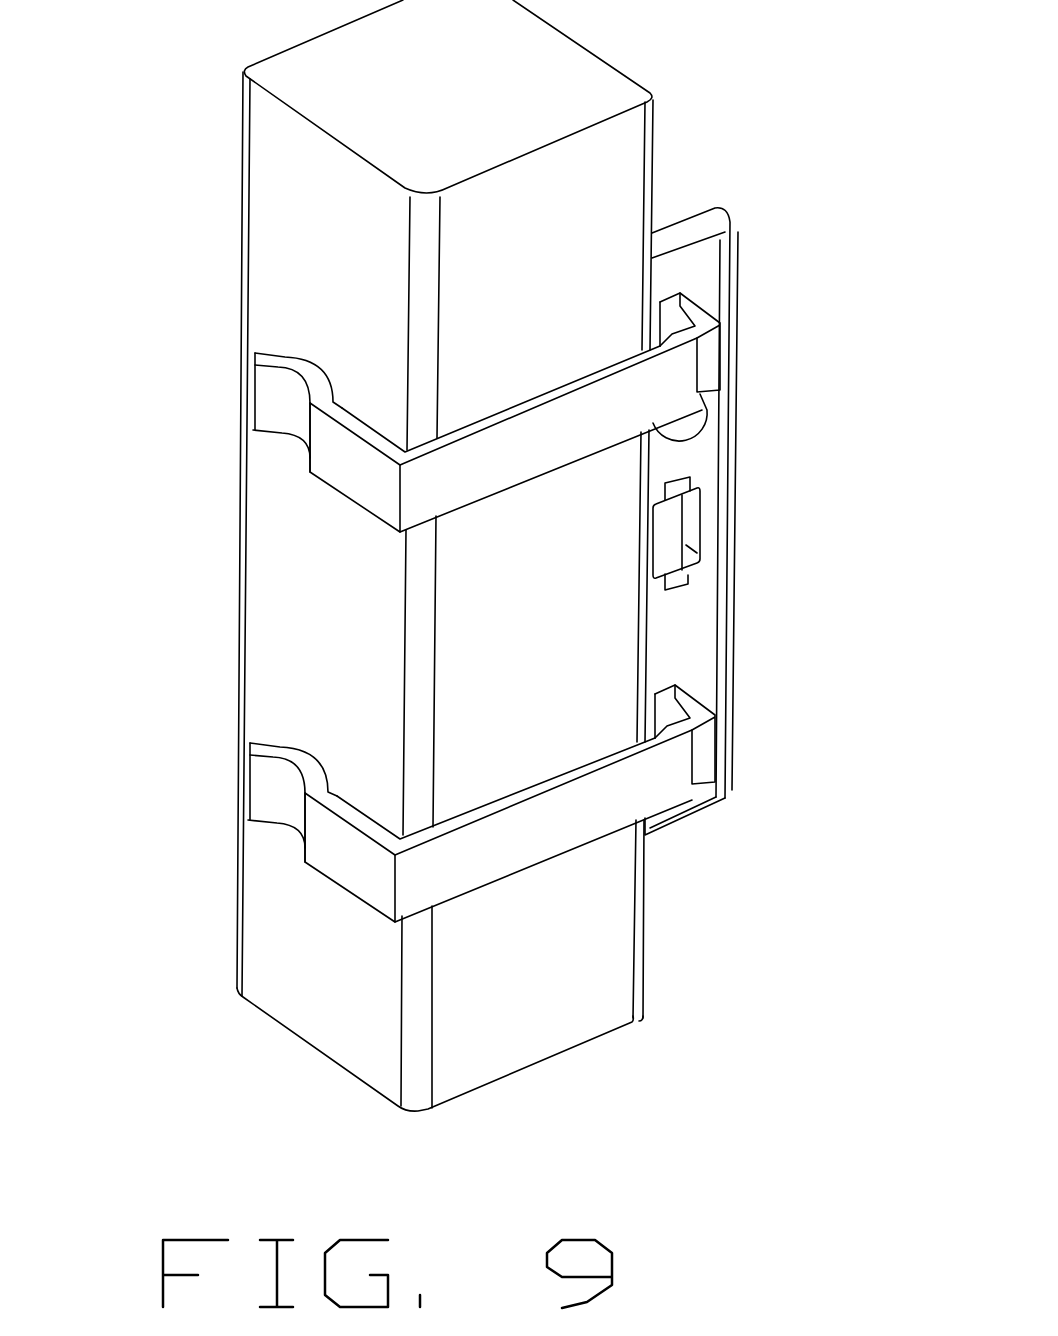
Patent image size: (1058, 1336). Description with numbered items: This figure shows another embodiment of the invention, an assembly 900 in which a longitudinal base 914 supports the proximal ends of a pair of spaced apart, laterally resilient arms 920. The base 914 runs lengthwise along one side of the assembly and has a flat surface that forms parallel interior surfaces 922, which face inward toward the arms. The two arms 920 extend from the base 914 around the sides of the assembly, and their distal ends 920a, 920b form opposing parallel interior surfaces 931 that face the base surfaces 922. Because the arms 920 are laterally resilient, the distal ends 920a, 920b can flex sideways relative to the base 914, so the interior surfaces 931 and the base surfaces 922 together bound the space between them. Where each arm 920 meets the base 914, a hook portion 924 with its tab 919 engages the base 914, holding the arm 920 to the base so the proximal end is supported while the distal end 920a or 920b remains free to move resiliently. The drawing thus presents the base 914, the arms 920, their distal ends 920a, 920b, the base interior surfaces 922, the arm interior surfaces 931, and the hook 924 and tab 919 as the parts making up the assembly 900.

The post assembly 900 is at (773, 162).
The longitudinal base 914 is at (740, 585).
The hook tab 919 is at (556, 388).
The laterally resilient arms 920 is at (391, 574).
The distal end of arm 920a is at (252, 383).
The distal end of arm 920b is at (247, 820).
The parallel interior surfaces 922 is at (643, 495).
The hook 924 is at (615, 505).
The opposing parallel interior surfaces 931 is at (357, 417).